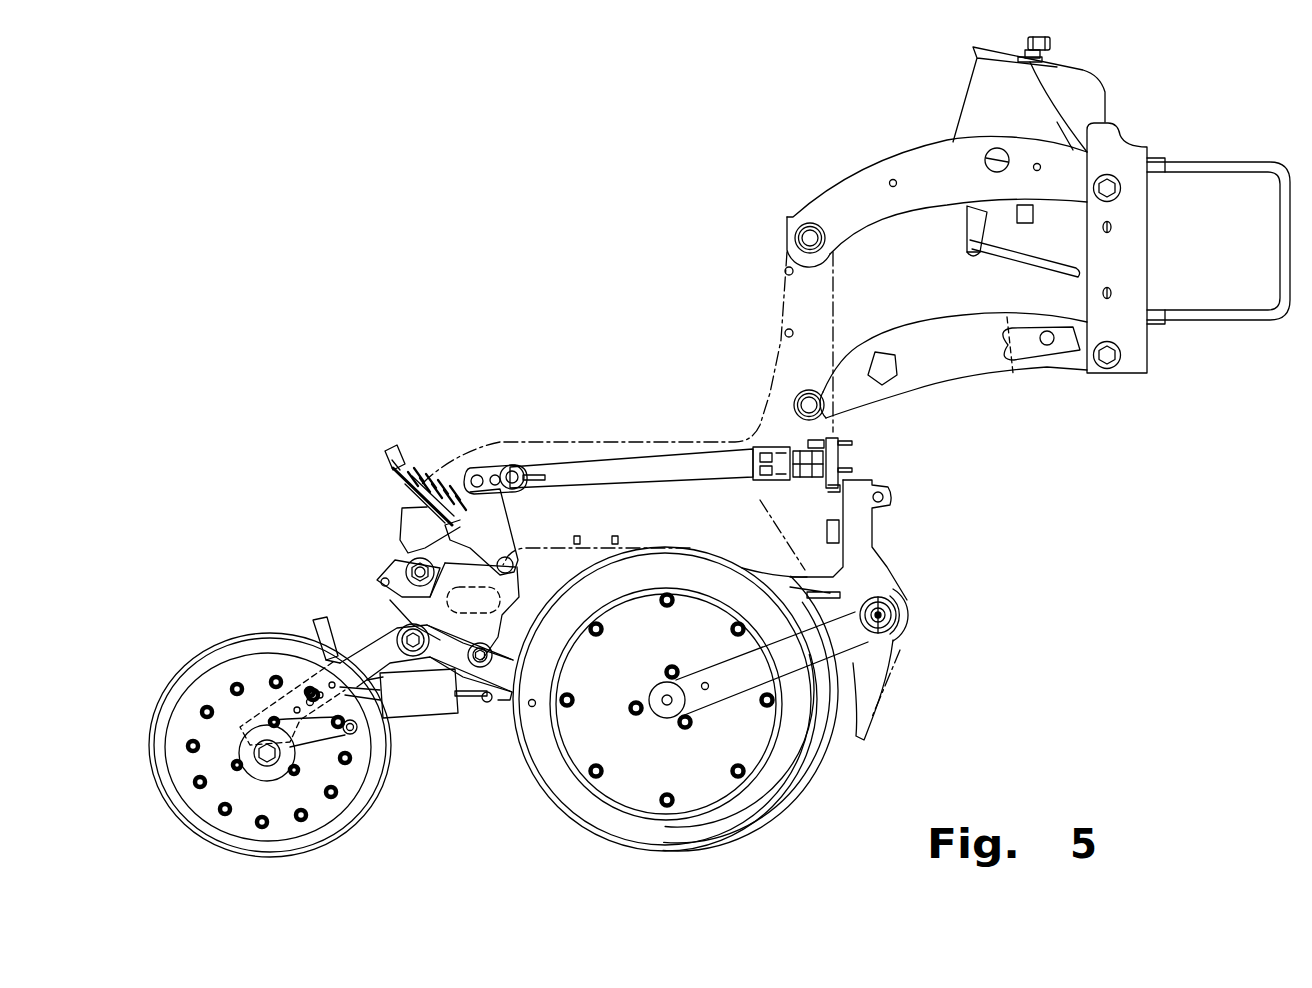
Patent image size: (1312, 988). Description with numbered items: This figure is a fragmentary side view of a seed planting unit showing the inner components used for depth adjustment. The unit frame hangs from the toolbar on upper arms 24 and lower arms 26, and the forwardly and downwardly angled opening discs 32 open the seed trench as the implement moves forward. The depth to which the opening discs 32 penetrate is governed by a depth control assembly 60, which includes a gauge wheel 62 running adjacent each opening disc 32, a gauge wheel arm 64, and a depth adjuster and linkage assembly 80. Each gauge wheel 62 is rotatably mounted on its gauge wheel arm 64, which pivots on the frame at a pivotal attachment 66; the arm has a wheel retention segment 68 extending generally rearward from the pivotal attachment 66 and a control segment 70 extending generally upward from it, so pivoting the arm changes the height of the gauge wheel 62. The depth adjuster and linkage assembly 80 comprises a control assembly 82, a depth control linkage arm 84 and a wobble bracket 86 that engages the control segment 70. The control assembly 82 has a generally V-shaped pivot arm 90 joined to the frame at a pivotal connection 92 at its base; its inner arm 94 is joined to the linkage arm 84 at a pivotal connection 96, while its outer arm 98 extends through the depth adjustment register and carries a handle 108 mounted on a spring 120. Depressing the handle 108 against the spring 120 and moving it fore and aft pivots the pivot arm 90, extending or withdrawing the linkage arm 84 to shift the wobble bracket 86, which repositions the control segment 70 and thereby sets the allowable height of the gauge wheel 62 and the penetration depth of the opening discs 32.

The upper arms 24 is at (905, 157).
The lower arms 26 is at (970, 353).
The opening discs 32 is at (826, 760).
The depth control assembly 60 is at (920, 687).
The gauge wheel 62 is at (750, 807).
The gauge wheel arm 64 is at (777, 554).
The pivotal attachment 66 is at (893, 613).
The wheel retention segment 68 is at (810, 653).
The control segment 70 is at (858, 527).
The depth adjuster and linkage assembly 80 is at (486, 431).
The control assembly 82 is at (378, 497).
The depth control linkage arm 84 is at (597, 470).
The wobble bracket 86 is at (880, 453).
The pivot arm 90 is at (493, 528).
The pivotal connection 92 is at (407, 613).
The inner arm 94 is at (503, 468).
The pivotal connection 96 is at (447, 467).
The outer arm 98 is at (410, 548).
The handle 108 is at (407, 490).
The spring 120 is at (447, 525).